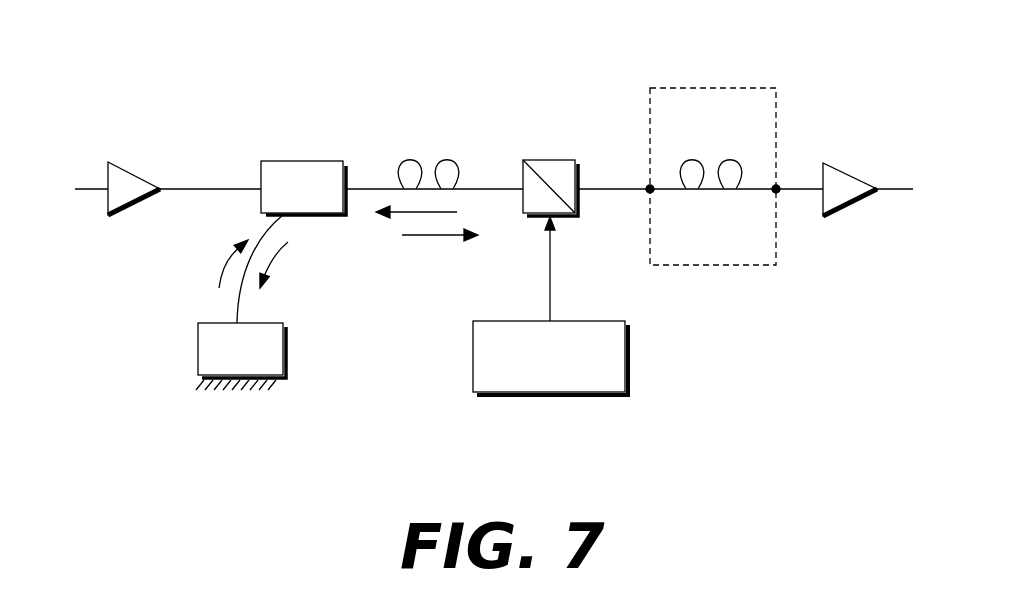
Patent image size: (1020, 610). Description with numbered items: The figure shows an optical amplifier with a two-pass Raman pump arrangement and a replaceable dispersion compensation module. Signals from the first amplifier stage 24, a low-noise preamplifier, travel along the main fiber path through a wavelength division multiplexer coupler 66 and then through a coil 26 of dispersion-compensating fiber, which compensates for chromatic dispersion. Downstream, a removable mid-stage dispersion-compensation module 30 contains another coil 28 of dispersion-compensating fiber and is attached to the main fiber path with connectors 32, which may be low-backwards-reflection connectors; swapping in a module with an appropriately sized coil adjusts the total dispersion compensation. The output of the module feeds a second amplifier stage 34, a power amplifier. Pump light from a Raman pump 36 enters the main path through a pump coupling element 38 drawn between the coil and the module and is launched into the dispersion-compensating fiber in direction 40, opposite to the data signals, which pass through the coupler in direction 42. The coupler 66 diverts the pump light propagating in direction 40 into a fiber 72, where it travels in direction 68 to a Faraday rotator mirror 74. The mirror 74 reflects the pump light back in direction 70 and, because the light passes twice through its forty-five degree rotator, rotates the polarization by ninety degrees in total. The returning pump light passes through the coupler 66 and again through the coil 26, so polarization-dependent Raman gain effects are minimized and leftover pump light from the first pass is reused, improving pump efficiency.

The first amplifier stage 24 is at (133, 168).
The wavelength division multiplexer coupler 66 is at (303, 161).
The coil of dispersion-compensating fiber 26 is at (483, 152).
The pump coupler / splitter 38 is at (560, 160).
The pump 36 is at (628, 370).
The direction 40 is at (407, 213).
The direction 42 is at (438, 236).
The removable mid-stage dispersion-compensation module 30 is at (763, 88).
The coil of dispersion-compensating fiber 28 is at (700, 197).
The connectors 32 is at (650, 189).
The second amplifier stage 34 is at (853, 175).
The fiber 72 is at (237, 310).
The direction 70 is at (220, 267).
The direction 68 is at (275, 252).
The Faraday rotator mirror 74 is at (283, 380).